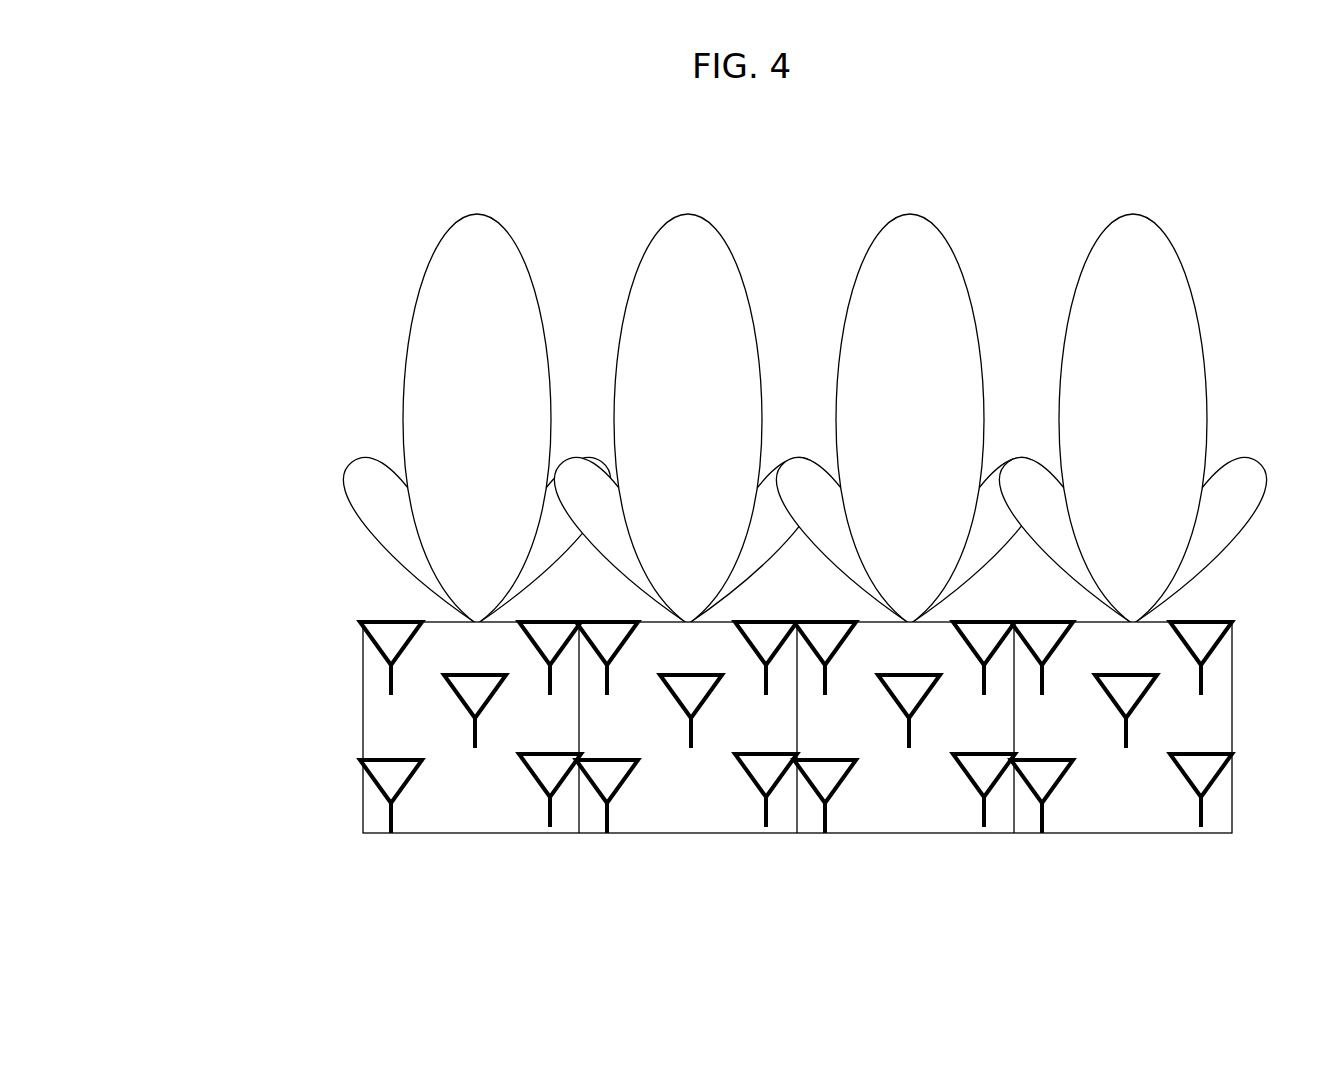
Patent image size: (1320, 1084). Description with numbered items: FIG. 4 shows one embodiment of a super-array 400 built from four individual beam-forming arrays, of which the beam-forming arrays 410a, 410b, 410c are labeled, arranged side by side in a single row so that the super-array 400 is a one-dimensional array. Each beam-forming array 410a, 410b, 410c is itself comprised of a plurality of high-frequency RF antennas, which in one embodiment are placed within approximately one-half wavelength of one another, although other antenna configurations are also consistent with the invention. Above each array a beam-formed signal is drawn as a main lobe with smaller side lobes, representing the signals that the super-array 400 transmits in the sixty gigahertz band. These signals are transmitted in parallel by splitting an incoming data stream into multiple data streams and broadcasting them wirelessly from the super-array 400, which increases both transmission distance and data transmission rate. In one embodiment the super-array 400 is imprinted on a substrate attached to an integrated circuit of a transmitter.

The super-array 400 is at (300, 764).
The beam-forming array 410a is at (504, 815).
The beam-forming array 410b is at (732, 822).
The beam-forming array 410c is at (950, 822).